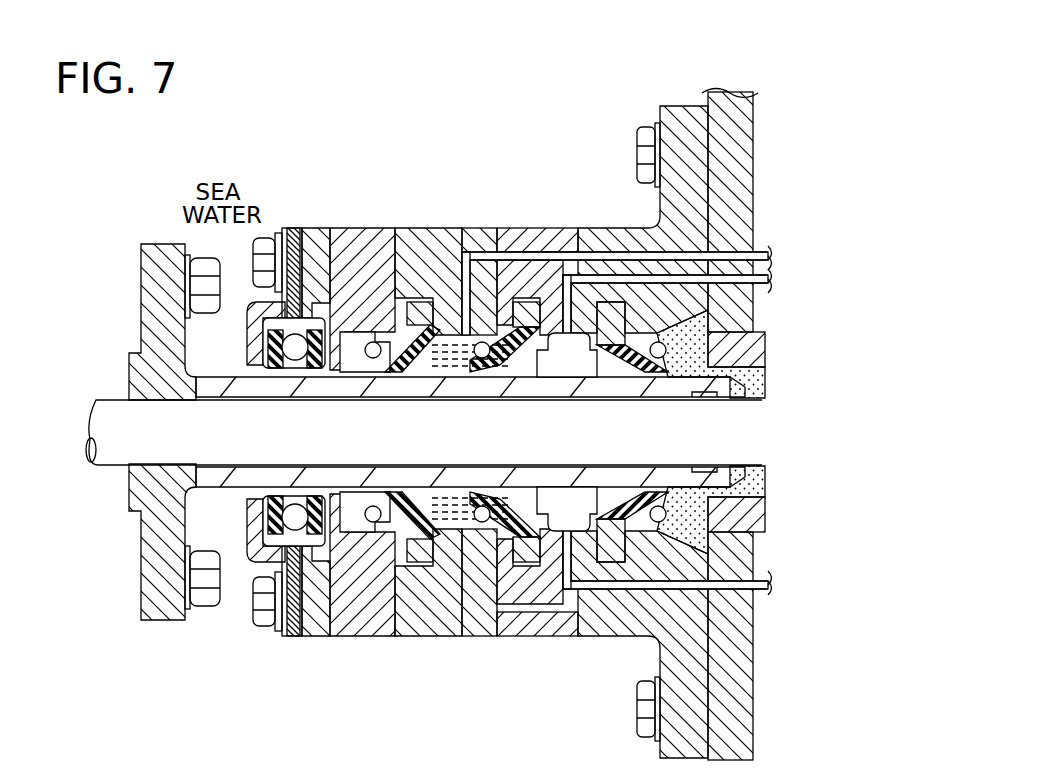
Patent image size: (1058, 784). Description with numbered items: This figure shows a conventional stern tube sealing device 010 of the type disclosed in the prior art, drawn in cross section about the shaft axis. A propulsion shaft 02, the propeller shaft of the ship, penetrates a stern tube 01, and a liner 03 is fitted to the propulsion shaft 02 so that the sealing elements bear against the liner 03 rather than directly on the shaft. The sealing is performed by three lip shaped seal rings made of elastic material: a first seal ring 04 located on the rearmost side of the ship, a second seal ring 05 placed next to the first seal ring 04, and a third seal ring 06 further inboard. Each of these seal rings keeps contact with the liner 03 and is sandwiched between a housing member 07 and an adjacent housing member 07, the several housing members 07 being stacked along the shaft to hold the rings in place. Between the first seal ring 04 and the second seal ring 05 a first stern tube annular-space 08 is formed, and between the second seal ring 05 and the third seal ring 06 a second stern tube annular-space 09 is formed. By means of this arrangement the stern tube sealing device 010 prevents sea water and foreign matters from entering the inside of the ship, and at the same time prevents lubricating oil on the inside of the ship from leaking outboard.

The stern tube 01 is at (735, 108).
The propulsion shaft 02 is at (113, 415).
The liner 03 is at (162, 244).
The first seal ring 04 is at (418, 302).
The second seal ring 05 is at (527, 302).
The third seal ring 06 is at (612, 302).
The housing member 07 is at (318, 232).
The first stern tube annular-space 08 is at (457, 520).
The second stern tube annular-space 09 is at (563, 520).
The stern tube sealing device 010 is at (568, 125).